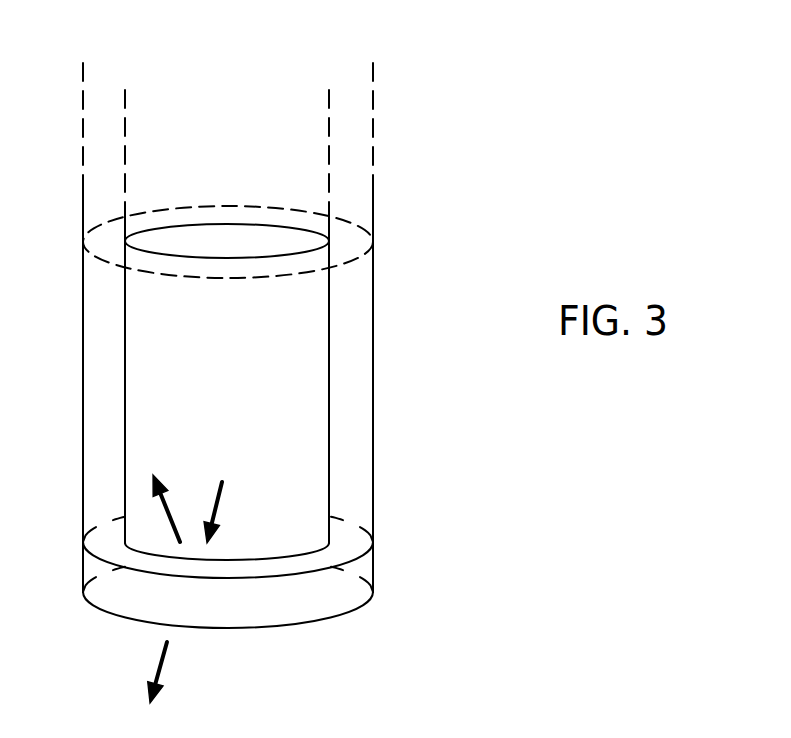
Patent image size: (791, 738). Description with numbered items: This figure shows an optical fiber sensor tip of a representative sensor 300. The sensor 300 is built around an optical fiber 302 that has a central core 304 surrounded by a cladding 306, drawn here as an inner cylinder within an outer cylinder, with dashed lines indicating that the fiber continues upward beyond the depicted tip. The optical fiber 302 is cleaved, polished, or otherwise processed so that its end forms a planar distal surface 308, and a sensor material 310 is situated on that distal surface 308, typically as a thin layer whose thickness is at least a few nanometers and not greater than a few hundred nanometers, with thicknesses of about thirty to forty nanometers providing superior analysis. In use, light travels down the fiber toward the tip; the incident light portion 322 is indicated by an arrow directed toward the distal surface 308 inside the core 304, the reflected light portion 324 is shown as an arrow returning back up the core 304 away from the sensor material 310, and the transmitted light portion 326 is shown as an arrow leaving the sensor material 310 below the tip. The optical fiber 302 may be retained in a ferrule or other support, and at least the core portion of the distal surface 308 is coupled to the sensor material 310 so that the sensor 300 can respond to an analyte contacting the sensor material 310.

The sensor 300 is at (430, 668).
The optical fiber 302 is at (405, 492).
The core 304 is at (268, 388).
The cladding 306 is at (353, 405).
The planar distal surface 308 is at (343, 543).
The sensor material 310 is at (318, 626).
The incident light portion 322 is at (215, 512).
The reflected light portion 324 is at (173, 508).
The transmitted light portion 326 is at (163, 665).